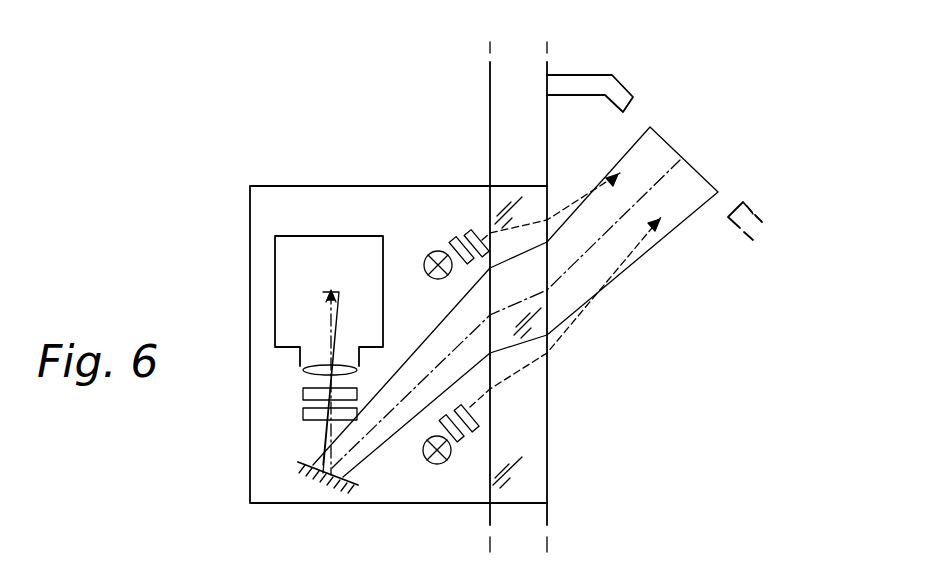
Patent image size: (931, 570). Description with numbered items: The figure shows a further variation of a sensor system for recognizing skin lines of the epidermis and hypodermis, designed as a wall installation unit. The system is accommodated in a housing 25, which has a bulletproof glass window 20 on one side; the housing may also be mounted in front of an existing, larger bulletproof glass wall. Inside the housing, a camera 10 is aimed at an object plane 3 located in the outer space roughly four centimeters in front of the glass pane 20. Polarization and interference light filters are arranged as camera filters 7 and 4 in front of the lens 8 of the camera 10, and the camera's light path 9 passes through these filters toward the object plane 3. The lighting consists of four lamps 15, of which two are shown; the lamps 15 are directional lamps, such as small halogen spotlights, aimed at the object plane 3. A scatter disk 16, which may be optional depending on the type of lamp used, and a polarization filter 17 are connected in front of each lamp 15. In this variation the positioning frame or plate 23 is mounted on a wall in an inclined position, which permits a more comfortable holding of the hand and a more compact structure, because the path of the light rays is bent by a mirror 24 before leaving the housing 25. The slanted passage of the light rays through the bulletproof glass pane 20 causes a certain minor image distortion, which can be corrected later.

The object plane 3 is at (653, 130).
The camera filter 4 is at (303, 414).
The camera filter 7 is at (303, 394).
The lens 8 is at (303, 370).
The laser light beam 9 is at (330, 291).
The camera 10 is at (343, 235).
The lamp 15 is at (438, 250).
The scatter disk 16 is at (453, 237).
The polarization filter 17 is at (469, 231).
The bulletproof glass window 20 is at (515, 492).
The positioning frame 23 is at (618, 86).
The mirror 24 is at (316, 474).
The housing 25 is at (325, 503).